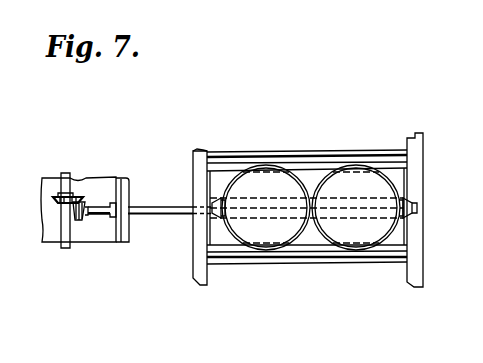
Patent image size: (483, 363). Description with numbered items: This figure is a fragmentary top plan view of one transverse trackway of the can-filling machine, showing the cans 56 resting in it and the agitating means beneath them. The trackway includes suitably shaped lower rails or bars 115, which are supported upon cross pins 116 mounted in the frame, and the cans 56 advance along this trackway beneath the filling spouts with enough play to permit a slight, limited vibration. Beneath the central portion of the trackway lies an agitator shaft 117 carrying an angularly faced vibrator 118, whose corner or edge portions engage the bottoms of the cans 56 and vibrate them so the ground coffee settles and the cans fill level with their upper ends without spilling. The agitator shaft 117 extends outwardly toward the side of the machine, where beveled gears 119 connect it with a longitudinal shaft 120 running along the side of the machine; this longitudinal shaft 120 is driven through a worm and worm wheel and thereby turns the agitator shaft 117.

The cans 56 is at (335, 230).
The lower rails 115 is at (237, 155).
The cross pins 116 is at (422, 138).
The agitator shaft 117 is at (162, 213).
The angularly faced vibrator 118 is at (223, 243).
The beveled gears 119 is at (82, 204).
The longitudinal shaft 120 is at (62, 173).